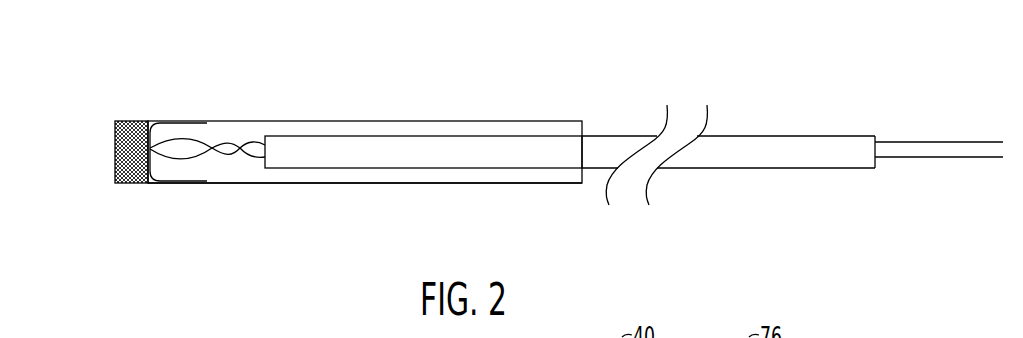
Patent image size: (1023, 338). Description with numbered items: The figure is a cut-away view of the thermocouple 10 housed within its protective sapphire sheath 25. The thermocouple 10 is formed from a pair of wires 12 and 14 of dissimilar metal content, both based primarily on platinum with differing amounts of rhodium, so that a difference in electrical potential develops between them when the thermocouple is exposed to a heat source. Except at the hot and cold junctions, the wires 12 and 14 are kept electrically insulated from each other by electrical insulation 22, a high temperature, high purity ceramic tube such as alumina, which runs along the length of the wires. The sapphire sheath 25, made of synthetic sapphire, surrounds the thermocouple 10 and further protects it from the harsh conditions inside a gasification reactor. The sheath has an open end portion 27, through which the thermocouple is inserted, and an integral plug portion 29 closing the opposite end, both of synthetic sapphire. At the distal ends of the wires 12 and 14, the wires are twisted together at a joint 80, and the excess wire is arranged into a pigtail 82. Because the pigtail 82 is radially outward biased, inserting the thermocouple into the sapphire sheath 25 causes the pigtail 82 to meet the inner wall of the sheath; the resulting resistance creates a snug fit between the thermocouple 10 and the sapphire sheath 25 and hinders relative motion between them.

The thermocouple 10 is at (445, 152).
The thermocouple wire 12 is at (983, 140).
The thermocouple wire 14 is at (983, 159).
The electrical insulation 22 is at (618, 136).
The sapphire sheath 25 is at (289, 106).
The open end portion 27 is at (267, 185).
The plug portion 29 is at (132, 183).
The joint 80 is at (239, 153).
The pigtail 82 is at (162, 121).